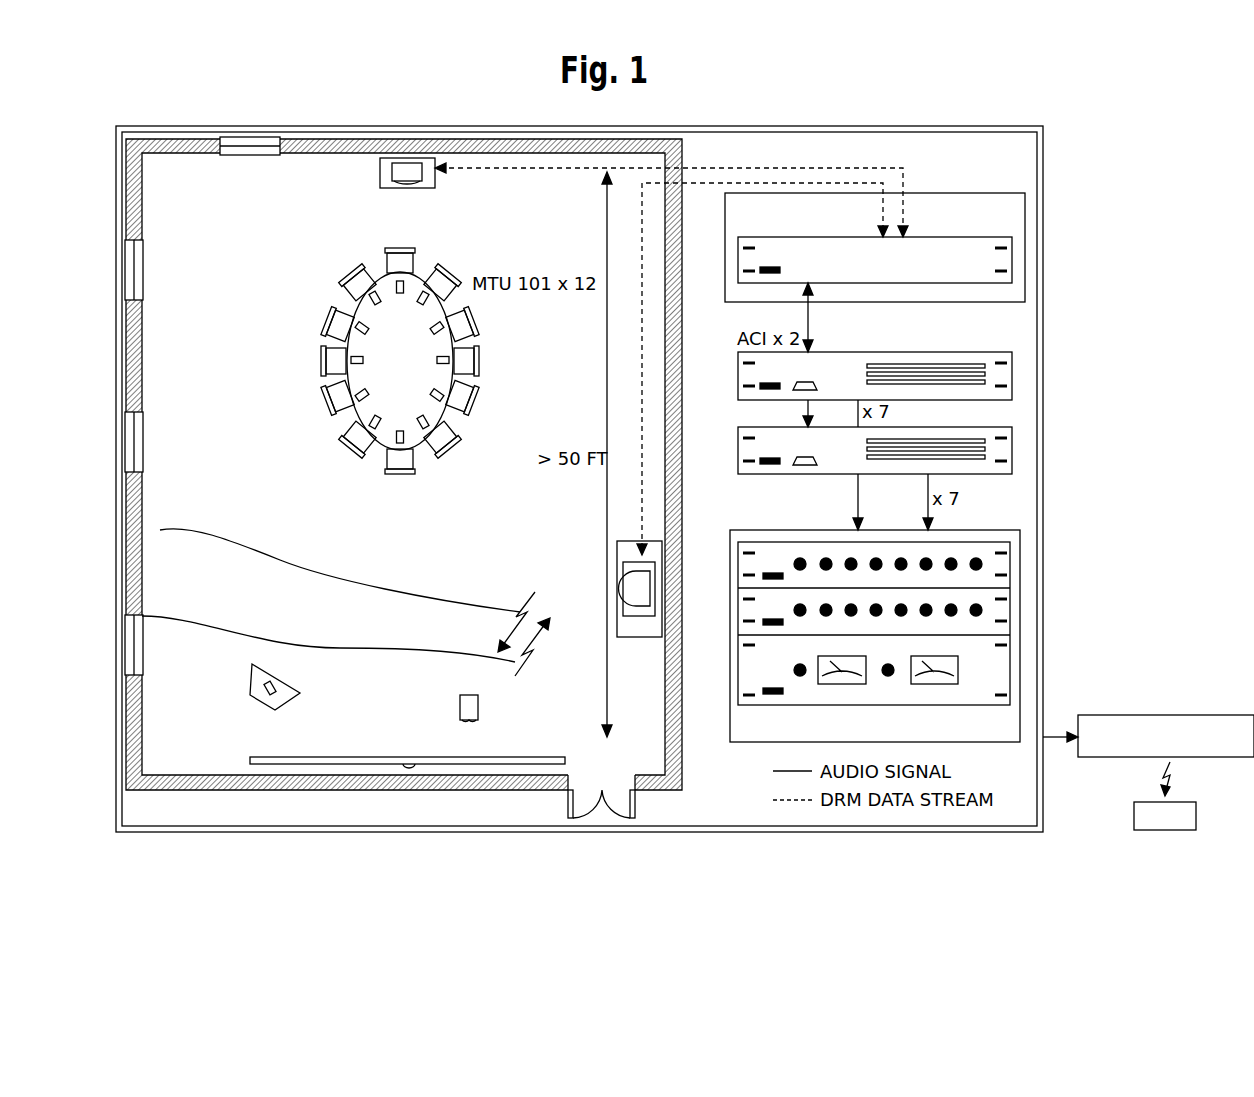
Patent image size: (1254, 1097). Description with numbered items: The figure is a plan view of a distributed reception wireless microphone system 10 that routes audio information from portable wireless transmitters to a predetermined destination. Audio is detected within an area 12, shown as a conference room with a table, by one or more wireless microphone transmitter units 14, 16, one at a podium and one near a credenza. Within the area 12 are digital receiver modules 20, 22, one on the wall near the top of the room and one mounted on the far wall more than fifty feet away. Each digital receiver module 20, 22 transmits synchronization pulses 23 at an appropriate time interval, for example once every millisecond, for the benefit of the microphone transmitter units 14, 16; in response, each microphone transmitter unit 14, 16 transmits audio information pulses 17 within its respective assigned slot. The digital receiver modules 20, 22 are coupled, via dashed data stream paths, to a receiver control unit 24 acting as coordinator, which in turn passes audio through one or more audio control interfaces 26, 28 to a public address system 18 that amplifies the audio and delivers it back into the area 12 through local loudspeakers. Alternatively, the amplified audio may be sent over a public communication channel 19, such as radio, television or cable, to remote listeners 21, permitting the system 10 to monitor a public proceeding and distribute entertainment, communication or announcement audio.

The distributed reception wireless system 10 is at (328, 838).
The area 12 is at (215, 790).
The wireless microphone transmitter unit 14 is at (250, 678).
The wireless microphone transmitter unit 16 is at (460, 713).
The audio information pulses 17 is at (142, 616).
The public address system 18 is at (1020, 610).
The public communication channel 19 is at (1200, 715).
The digital receiver module 20 is at (380, 172).
The remote listeners 21 is at (1197, 815).
The digital receiver module 22 is at (640, 637).
The synchronization pulses 23 is at (160, 530).
The receiver control unit 24 is at (988, 193).
The audio control interface 26 is at (1012, 372).
The audio control interface 28 is at (1012, 448).